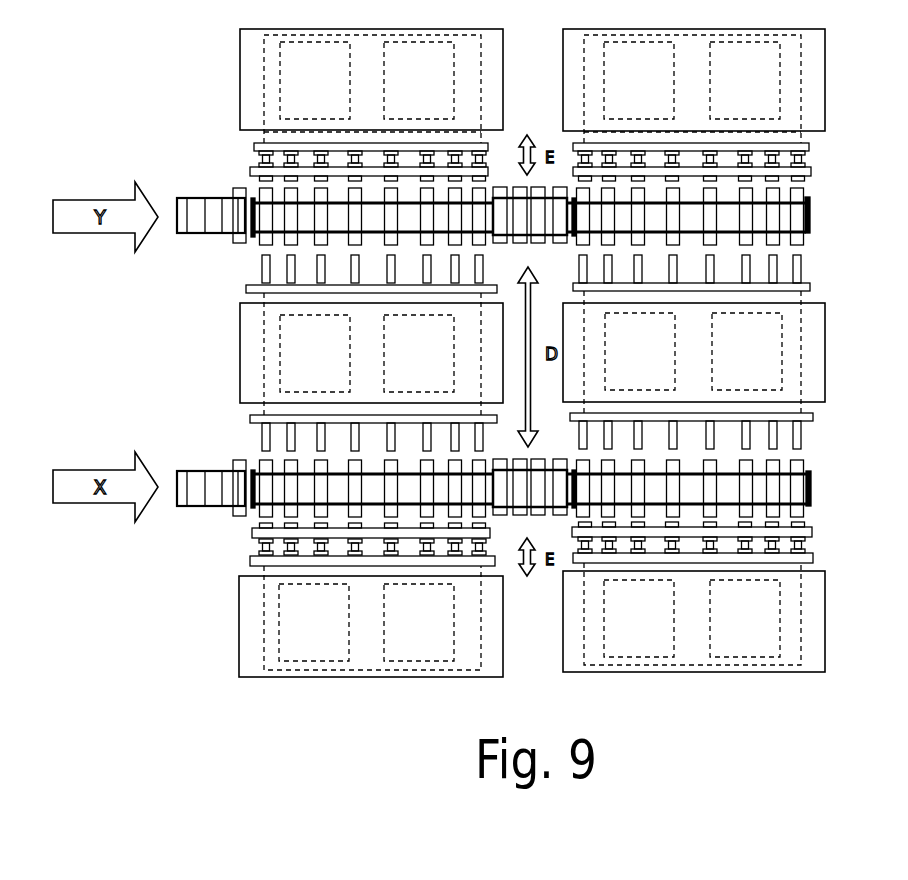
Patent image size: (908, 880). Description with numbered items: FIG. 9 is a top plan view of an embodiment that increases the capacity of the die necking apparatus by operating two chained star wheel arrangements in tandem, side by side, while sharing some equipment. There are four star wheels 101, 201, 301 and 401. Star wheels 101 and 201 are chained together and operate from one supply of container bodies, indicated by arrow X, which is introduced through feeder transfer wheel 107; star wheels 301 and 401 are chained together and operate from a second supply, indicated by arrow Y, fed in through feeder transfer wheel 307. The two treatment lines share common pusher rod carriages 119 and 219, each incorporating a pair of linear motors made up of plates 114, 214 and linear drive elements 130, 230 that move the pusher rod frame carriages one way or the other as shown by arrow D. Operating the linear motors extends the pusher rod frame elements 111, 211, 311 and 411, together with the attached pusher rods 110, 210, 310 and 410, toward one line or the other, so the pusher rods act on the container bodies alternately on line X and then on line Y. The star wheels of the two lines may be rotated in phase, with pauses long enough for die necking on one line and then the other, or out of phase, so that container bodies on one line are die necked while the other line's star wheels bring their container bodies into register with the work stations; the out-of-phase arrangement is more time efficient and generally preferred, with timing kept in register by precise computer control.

The star wheel 101 is at (253, 468).
The feeder transfer wheel 107 is at (187, 472).
The pusher rod 110 is at (262, 437).
The pusher rod frame element 111 is at (253, 420).
The plate 114 is at (367, 353).
The pusher rod carriage 119 is at (336, 354).
The linear drive element 130 is at (367, 353).
The star wheel 201 is at (812, 477).
The pusher rod 210 is at (805, 438).
The pusher rod frame element 211 is at (813, 415).
The plate 214 is at (693, 351).
The pusher rod carriage 219 is at (728, 352).
The linear drive element 230 is at (673, 361).
The star wheel 301 is at (255, 195).
The feeder transfer wheel 307 is at (197, 200).
The pusher rod 310 is at (261, 258).
The pusher rod frame element 311 is at (257, 286).
The star wheel 401 is at (809, 214).
The pusher rod 410 is at (803, 263).
The pusher rod frame element 411 is at (809, 283).